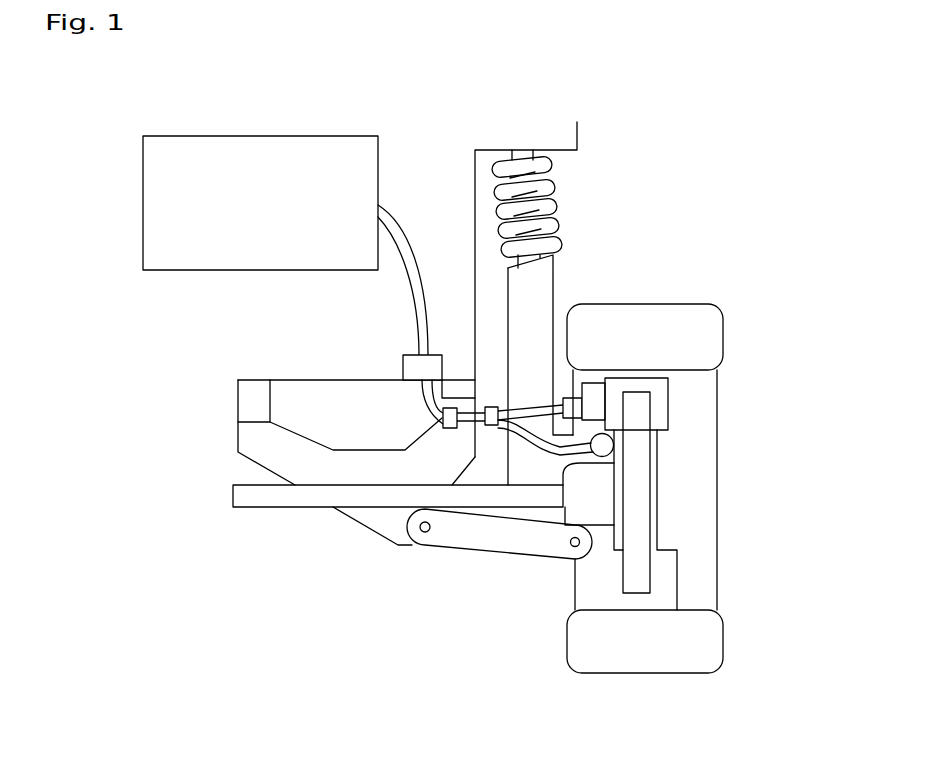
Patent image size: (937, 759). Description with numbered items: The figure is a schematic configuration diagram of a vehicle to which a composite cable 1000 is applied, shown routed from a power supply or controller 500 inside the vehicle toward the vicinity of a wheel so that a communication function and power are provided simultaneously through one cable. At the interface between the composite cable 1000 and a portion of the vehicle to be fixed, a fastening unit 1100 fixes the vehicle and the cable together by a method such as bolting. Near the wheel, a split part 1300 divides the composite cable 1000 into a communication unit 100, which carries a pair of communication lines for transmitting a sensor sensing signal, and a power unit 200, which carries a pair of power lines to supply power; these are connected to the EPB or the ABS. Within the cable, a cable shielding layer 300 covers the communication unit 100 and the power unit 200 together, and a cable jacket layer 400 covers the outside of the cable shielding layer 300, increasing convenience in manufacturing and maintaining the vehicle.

The communication unit 100 is at (550, 452).
The power unit 200 is at (531, 405).
The cable shielding layer 300 is at (660, 402).
The cable jacket layer 400 is at (712, 337).
The controller 500 is at (260, 203).
The composite cable 1000 is at (449, 509).
The fastening unit 1100 is at (443, 421).
The split part 1300 is at (493, 426).